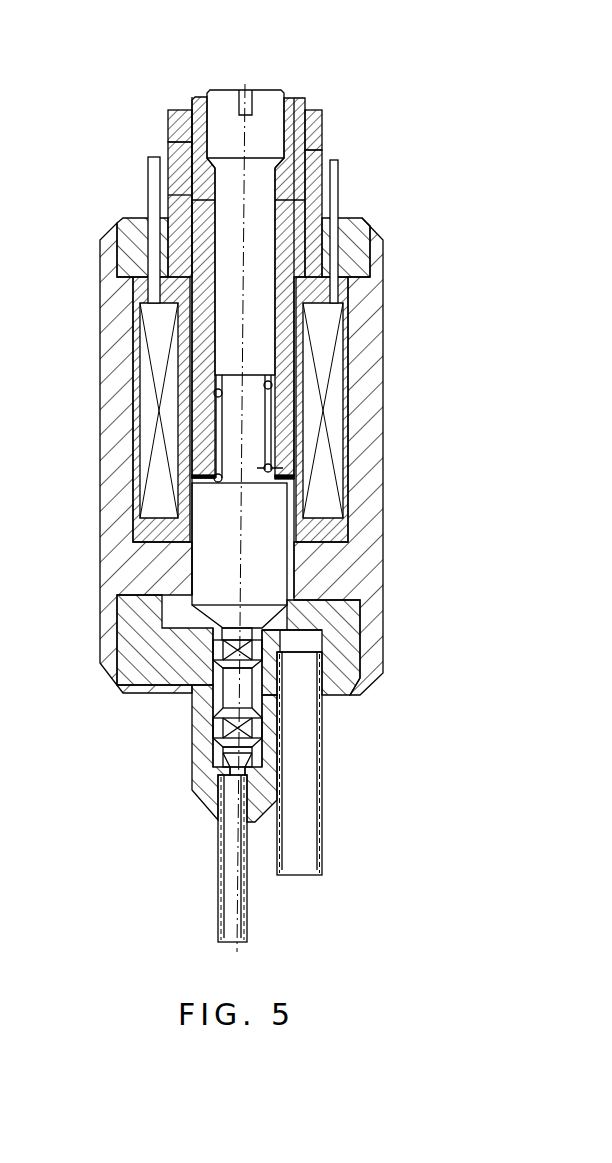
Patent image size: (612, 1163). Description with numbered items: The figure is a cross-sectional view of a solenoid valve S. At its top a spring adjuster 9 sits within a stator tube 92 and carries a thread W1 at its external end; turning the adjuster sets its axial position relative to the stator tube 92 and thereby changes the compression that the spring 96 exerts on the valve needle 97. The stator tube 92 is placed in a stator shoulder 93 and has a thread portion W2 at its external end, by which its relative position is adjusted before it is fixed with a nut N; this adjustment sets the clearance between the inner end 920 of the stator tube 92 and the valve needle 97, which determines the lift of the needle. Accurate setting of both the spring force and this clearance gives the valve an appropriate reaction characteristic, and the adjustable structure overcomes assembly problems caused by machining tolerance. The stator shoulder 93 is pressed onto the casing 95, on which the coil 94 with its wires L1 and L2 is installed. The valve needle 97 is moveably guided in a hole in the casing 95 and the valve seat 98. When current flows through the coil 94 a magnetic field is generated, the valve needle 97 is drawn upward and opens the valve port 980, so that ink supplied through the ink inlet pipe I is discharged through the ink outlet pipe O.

The spring adjuster 9 is at (263, 98).
The stator tube 92 is at (306, 140).
The stator shoulder 93 is at (360, 260).
The coil 94 is at (335, 367).
The casing 95 is at (383, 418).
The spring 96 is at (293, 473).
The inner end 920 is at (196, 476).
The valve needle 97 is at (288, 608).
The valve port 980 is at (215, 757).
The valve seat 98 is at (197, 806).
The thread W1 is at (202, 98).
The nut N is at (173, 120).
The thread portion W2 is at (185, 168).
The wire L1 is at (150, 187).
The wire L2 is at (338, 193).
The ink inlet pipe I is at (322, 800).
The ink outlet pipe O is at (247, 922).
The solenoid valve S is at (482, 73).